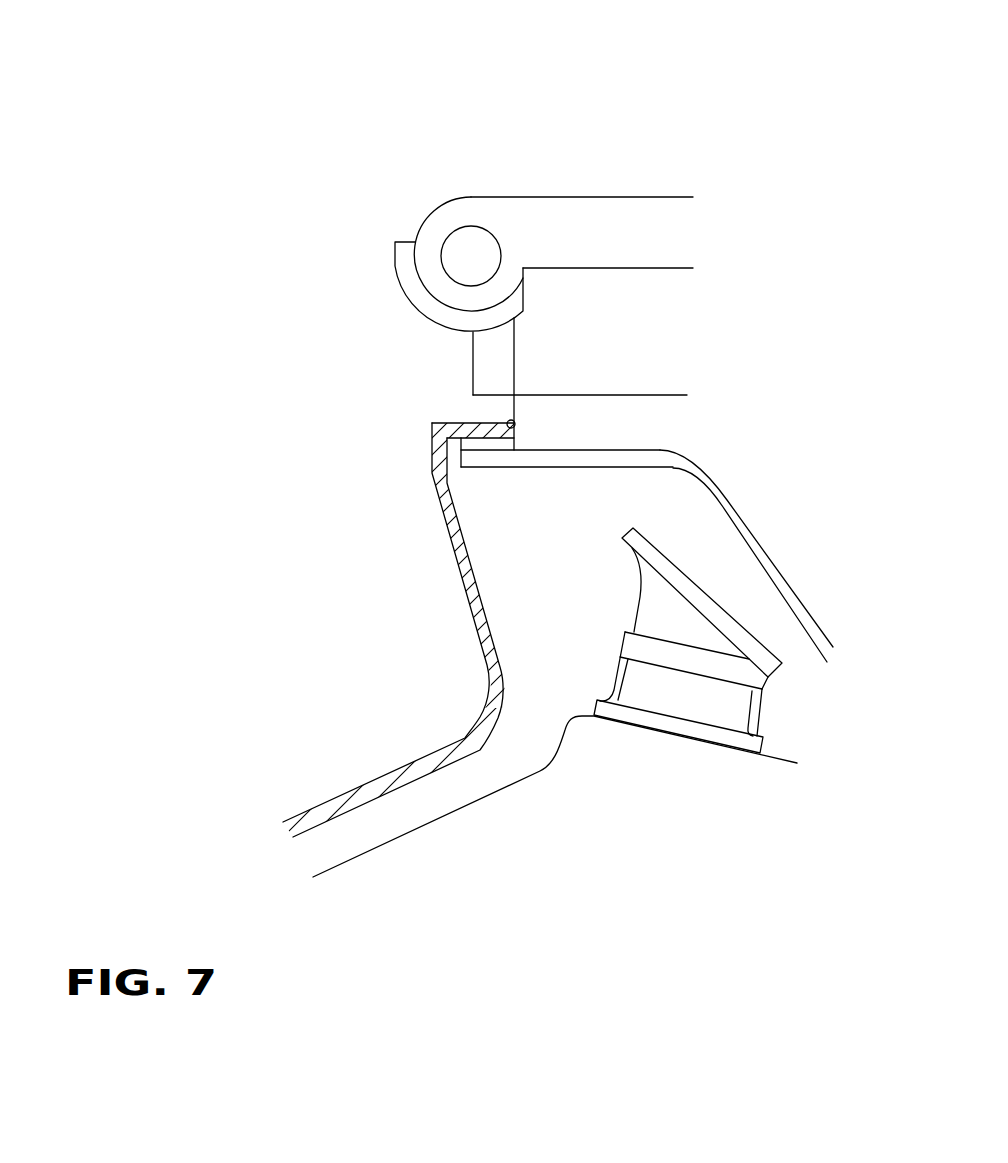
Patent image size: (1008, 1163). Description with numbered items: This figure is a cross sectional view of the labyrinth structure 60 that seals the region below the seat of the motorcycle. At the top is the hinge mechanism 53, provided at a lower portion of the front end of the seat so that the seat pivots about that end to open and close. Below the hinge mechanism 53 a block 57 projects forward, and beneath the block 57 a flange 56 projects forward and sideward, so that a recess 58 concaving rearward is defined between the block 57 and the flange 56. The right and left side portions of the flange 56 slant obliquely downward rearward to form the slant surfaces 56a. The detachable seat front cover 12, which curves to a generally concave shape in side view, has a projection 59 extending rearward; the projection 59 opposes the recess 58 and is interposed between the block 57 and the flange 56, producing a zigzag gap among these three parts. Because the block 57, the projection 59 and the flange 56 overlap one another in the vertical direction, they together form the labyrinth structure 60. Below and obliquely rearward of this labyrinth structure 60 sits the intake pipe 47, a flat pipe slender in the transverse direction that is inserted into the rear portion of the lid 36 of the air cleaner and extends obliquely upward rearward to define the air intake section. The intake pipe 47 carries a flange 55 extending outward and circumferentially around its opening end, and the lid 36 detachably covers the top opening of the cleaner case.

The hinge mechanism 53 is at (470, 162).
The block 57 is at (473, 363).
The recess 58 is at (516, 422).
The projection 59 is at (477, 435).
The labyrinth structure 60 is at (446, 404).
The seat front cover 12 is at (462, 737).
The lid 36 is at (433, 822).
The flange 56 is at (483, 467).
The slant surface 56a is at (742, 520).
The flange of intake pipe 55 is at (620, 528).
The intake pipe 47 is at (630, 610).